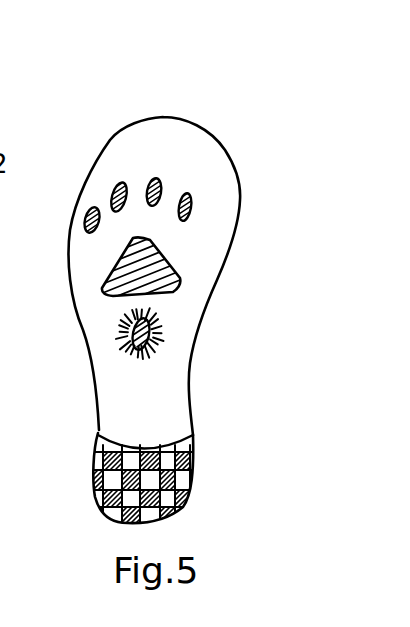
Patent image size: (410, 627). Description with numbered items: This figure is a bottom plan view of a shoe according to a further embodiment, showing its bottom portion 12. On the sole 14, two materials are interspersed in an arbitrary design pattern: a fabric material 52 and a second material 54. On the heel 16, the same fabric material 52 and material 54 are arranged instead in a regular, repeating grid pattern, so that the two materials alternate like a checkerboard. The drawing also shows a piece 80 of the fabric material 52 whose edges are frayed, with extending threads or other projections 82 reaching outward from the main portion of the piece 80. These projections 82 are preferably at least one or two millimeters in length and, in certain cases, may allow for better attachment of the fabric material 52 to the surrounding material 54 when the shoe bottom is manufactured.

The bottom portion 12 is at (258, 130).
The sole 14 is at (213, 233).
The heel 16 is at (180, 467).
The fabric material 52 is at (193, 200).
The material 54 is at (83, 250).
The piece of fabric material 80 is at (128, 351).
The projections 82 is at (150, 343).